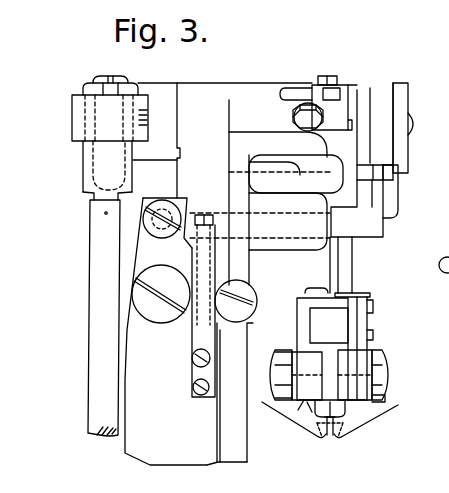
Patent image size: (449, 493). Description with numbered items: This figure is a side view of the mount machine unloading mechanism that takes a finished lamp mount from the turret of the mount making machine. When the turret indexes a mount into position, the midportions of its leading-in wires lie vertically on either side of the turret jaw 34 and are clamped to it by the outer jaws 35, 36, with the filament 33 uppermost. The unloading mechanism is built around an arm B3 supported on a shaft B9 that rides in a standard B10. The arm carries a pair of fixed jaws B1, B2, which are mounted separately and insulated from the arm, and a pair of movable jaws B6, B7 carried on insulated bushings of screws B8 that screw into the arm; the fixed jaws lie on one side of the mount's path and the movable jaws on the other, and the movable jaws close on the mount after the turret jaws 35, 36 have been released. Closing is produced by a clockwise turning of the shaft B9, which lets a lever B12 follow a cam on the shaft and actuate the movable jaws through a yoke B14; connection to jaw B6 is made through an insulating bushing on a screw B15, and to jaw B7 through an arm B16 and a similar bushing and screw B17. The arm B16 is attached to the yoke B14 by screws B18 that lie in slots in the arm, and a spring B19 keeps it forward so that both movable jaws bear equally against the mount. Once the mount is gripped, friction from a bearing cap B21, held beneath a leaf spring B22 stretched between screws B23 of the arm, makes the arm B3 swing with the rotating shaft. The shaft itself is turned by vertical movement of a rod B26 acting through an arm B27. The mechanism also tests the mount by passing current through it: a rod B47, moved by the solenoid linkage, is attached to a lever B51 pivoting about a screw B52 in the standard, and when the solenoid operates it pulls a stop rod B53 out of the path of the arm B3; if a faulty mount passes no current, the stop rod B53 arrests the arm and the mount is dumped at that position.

The standard B10 is at (235, 83).
The arm B27 is at (72, 127).
The rod B26 is at (88, 342).
The lever B51 is at (142, 252).
The screw B52 is at (155, 313).
The stop rod B53 is at (305, 242).
The rod B47 is at (220, 422).
The leaf spring B22 is at (320, 85).
The screws B23 is at (335, 77).
The bearing cap B21 is at (343, 97).
The shaft B9 is at (415, 123).
The lever B12 is at (383, 233).
The yoke B14 is at (337, 255).
The arm B3 is at (353, 270).
The spring B19 is at (362, 292).
The arm B16 is at (363, 347).
The screws B18 is at (373, 330).
The screw B15 is at (283, 390).
The screws B8 is at (382, 358).
The screw B17 is at (378, 397).
The fixed jaw B1 is at (317, 413).
The fixed jaw B2 is at (349, 414).
The filament 33 is at (307, 406).
The movable jaw B6 is at (322, 420).
The movable jaw B7 is at (335, 418).
The jaw 34 is at (330, 435).
The jaw 35 is at (316, 437).
The jaw 36 is at (346, 434).